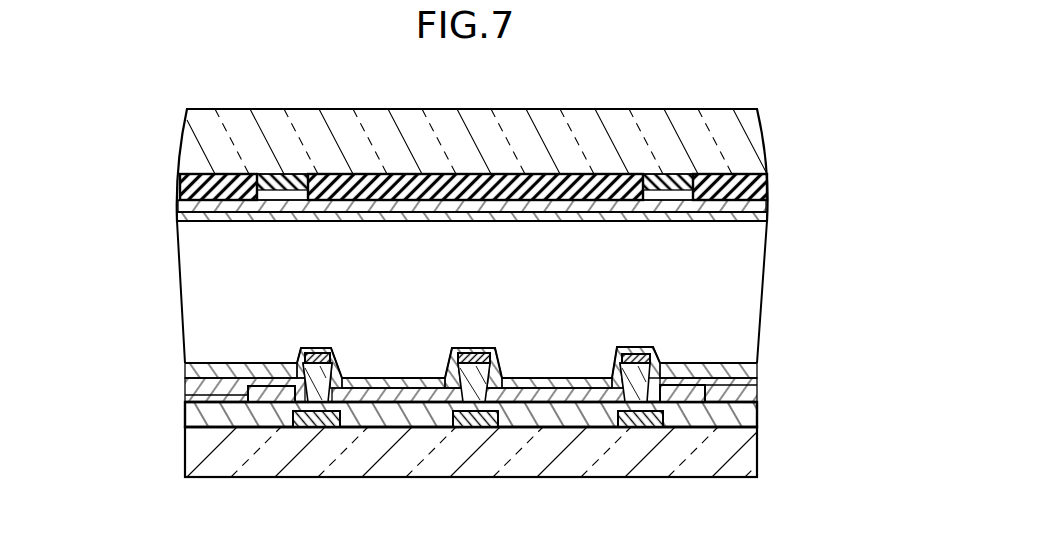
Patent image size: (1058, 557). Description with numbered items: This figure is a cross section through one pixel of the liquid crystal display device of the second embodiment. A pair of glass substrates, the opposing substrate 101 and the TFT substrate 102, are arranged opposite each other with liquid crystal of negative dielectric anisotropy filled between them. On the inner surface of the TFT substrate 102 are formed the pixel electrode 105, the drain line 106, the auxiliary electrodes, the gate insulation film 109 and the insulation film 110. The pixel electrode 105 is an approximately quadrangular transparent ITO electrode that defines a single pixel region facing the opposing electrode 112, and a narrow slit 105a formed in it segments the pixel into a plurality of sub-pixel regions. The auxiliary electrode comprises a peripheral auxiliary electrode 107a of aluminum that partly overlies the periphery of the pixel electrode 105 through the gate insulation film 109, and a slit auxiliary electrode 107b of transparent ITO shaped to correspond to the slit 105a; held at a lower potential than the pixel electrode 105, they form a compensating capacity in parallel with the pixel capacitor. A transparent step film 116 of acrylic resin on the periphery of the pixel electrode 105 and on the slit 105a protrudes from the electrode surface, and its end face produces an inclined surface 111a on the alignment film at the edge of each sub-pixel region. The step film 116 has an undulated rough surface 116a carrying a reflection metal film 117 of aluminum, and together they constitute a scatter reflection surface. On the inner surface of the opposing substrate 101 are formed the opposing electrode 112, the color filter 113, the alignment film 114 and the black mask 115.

The opposing substrate 101 is at (620, 137).
The TFT substrate 102 is at (692, 458).
The pixel electrode 105 is at (400, 401).
The slit 105a is at (480, 405).
The drain line 106 is at (190, 400).
The peripheral auxiliary electrode 107a is at (318, 428).
The slit auxiliary electrode 107b is at (475, 428).
The gate insulation film 109 is at (238, 428).
The insulation film 110 is at (205, 388).
The inclined surface 111a is at (352, 388).
The opposing electrode 112 is at (640, 213).
The color filter 113 is at (228, 178).
The alignment film 114 is at (262, 209).
The black mask 115 is at (283, 182).
The transparent step film 116 is at (297, 364).
The rough surface 116a is at (333, 348).
The reflection metal film 117 is at (313, 350).